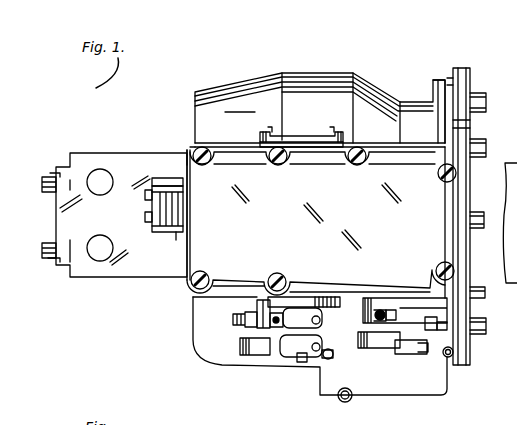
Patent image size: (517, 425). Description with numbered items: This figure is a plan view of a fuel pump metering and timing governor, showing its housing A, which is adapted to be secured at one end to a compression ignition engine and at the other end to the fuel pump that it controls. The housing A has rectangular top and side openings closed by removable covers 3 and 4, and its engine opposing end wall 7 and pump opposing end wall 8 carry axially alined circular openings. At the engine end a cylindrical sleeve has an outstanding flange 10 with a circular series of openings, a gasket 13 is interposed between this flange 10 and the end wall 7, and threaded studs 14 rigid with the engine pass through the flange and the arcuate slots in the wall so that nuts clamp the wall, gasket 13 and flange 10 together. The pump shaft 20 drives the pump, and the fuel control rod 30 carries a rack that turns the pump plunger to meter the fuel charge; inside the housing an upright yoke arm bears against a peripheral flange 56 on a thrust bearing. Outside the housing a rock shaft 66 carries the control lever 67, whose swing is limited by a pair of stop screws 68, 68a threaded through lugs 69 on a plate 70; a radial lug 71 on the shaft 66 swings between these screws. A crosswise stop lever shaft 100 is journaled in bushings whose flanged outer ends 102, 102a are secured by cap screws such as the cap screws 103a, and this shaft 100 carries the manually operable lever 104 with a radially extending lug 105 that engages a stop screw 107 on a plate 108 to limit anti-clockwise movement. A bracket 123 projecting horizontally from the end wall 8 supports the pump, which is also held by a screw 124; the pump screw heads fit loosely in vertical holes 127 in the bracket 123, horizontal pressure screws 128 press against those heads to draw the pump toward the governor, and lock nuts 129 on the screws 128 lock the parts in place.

The housing A is at (326, 75).
The removable cover 3 is at (214, 152).
The removable cover 4 is at (392, 396).
The engine opposing end wall 7 is at (450, 92).
The pump opposing end wall 8 is at (192, 308).
The outstanding flange 10 is at (471, 74).
The gasket 13 is at (458, 127).
The threaded studs 14 is at (486, 102).
The shaft 20 is at (155, 217).
The rod 30 is at (165, 180).
The outstanding peripheral flange 56 is at (488, 330).
The rock shaft 66 is at (410, 356).
The control lever 67 is at (382, 350).
The stop screw 68 is at (380, 310).
The stop screw 68a is at (440, 330).
The lugs 69 is at (358, 340).
The plate 70 is at (410, 306).
The radial lug 71 is at (392, 310).
The horizontal shaft 100 is at (300, 363).
The flanged outer end 102 is at (318, 296).
The flanged outer end 102a is at (316, 149).
The cap screws 103a is at (340, 130).
The manually operable lever 104 is at (254, 357).
The radially extending lug 105 is at (278, 330).
The stop screw 107 is at (233, 321).
The plate 108 is at (256, 307).
The bracket 123 is at (133, 274).
The screw 124 is at (178, 236).
The vertical holes 127 is at (107, 172).
The screws 128 is at (46, 177).
The lock nuts 129 is at (60, 172).